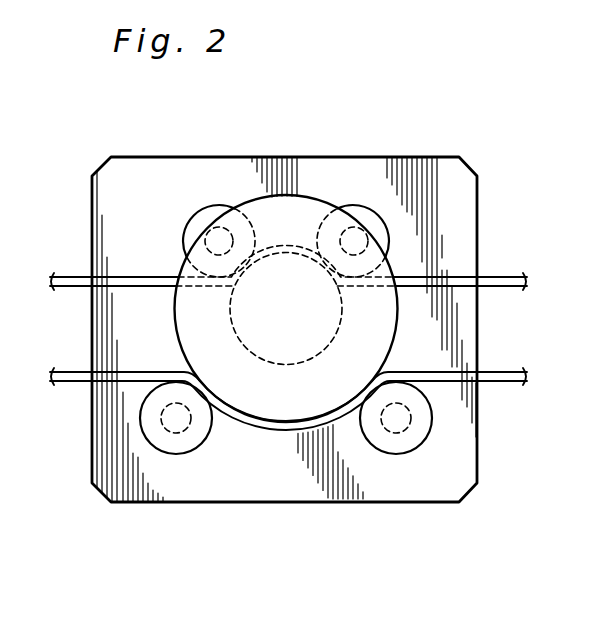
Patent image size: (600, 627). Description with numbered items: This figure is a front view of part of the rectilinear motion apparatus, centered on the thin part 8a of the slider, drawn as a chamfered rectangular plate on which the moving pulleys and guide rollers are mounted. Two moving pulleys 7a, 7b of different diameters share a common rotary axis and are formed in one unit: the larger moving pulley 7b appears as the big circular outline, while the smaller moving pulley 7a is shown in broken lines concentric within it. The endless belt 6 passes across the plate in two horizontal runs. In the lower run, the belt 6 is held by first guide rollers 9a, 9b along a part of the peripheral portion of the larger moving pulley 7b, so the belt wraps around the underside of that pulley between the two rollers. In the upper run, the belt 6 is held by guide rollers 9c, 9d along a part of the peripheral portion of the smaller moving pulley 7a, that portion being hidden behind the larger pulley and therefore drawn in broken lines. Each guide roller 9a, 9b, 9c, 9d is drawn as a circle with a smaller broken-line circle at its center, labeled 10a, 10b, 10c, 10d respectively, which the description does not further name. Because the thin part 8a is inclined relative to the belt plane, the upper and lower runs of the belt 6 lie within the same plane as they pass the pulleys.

The endless belt 6 is at (68, 382).
The moving pulley 7a is at (298, 347).
The moving pulley 7b is at (265, 397).
The thin part 8a is at (375, 488).
The first guide roller 9a is at (177, 445).
The first guide roller 9b is at (407, 445).
The guide roller 9c is at (215, 210).
The guide roller 9d is at (367, 212).
The hole 10a is at (172, 424).
The hole 10b is at (402, 421).
The hole 10c is at (212, 236).
The hole 10d is at (367, 243).